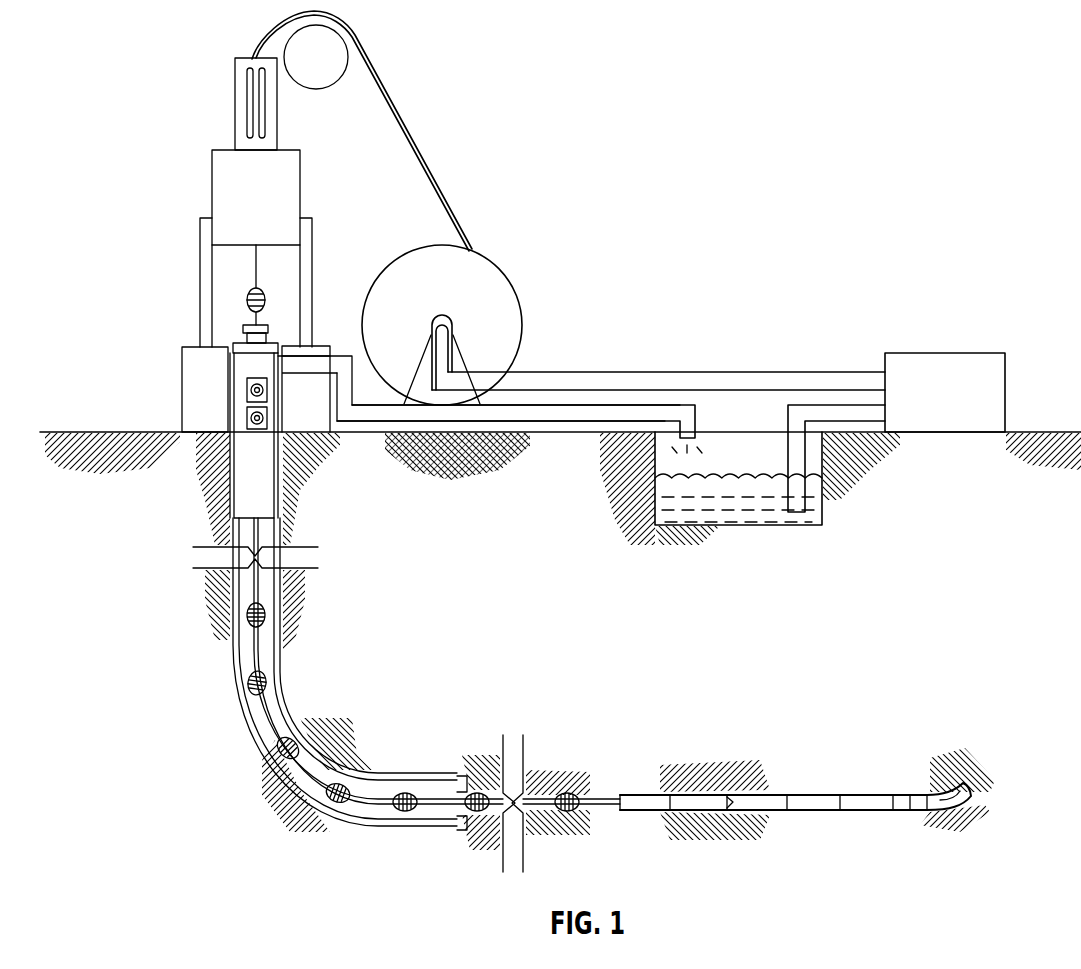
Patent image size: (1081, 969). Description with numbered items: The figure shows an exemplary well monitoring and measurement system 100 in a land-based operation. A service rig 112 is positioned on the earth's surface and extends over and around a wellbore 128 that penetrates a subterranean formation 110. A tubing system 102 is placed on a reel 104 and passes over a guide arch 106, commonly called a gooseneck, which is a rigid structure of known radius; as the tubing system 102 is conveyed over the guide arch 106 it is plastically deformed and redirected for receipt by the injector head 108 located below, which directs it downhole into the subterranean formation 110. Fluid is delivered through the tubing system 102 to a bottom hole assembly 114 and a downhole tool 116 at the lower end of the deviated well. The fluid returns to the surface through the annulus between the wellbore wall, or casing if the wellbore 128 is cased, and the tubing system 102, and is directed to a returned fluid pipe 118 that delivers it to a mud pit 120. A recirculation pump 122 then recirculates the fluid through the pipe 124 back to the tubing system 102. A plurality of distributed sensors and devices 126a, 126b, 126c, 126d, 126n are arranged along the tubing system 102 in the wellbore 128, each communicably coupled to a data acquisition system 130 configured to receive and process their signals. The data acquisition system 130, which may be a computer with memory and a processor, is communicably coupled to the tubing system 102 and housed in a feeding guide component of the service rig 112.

The well monitoring and measurement system 100 is at (987, 48).
The tubing system 102 is at (424, 162).
The reel 104 is at (478, 257).
The guide arch 106 is at (318, 92).
The injector head 108 is at (245, 358).
The subterranean formation 110 is at (211, 483).
The service rig 112 is at (190, 139).
The bottom hole assembly 114 is at (817, 797).
The downhole tool 116 is at (967, 775).
The returned fluid pipe 118 is at (570, 423).
The mud pit 120 is at (772, 518).
The recirculation pump 122 is at (974, 353).
The pipe 124 is at (692, 373).
The distributed sensor 126a is at (268, 614).
The distributed sensor 126b is at (270, 685).
The distributed sensor 126c is at (318, 723).
The distributed sensor 126d is at (334, 817).
The distributed sensor 126n is at (561, 828).
The wellbore 128 is at (282, 506).
The data acquisition system 130 is at (277, 212).